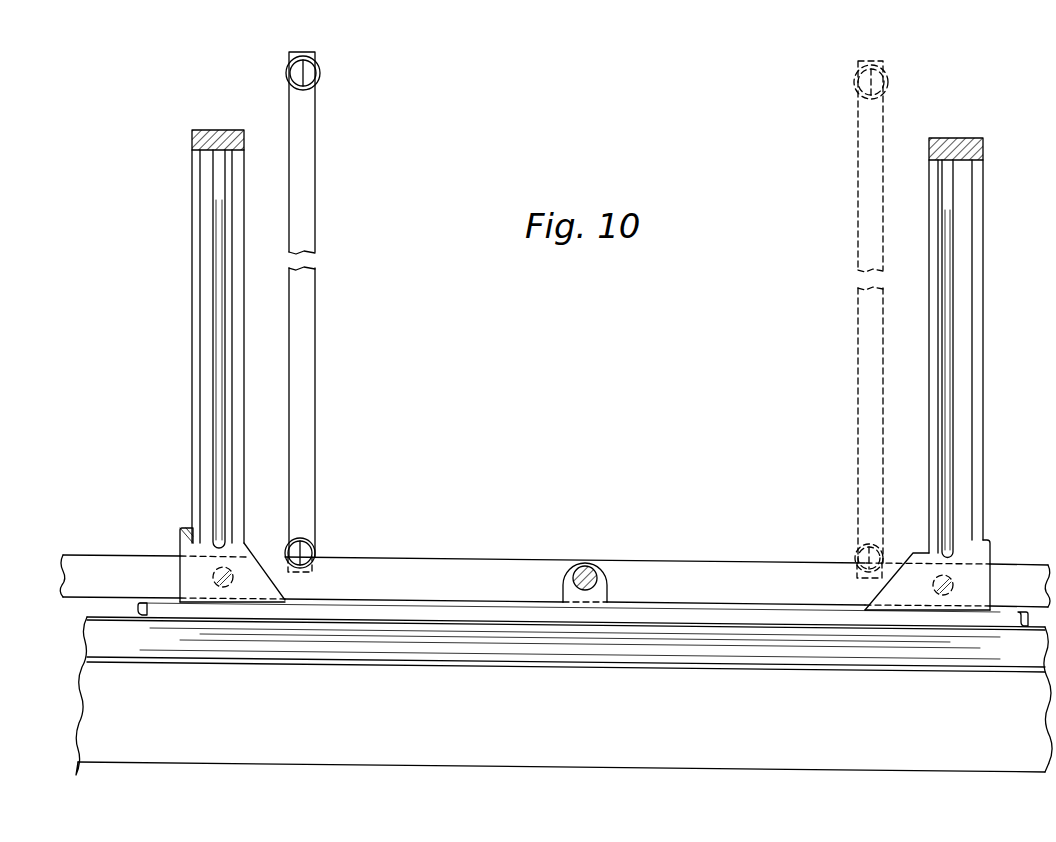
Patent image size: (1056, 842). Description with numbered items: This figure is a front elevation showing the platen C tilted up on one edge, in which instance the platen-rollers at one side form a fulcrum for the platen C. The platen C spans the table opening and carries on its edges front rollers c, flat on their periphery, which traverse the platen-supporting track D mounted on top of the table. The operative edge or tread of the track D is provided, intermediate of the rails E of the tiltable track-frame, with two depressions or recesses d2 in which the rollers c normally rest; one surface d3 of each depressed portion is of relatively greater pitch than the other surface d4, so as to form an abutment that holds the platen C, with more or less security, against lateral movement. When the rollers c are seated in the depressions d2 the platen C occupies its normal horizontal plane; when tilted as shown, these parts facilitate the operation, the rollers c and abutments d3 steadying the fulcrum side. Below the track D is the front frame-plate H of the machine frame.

The front frame-plate H is at (663, 615).
The platen-supporting track D is at (555, 581).
The tiltable track-frame rails E is at (200, 392).
The platen C is at (293, 380).
The front rollers c is at (311, 555).
The depressions or recesses d2 is at (855, 578).
The abutment surface of depression d3 is at (284, 551).
The lesser-pitch surface of depression d4 is at (318, 558).